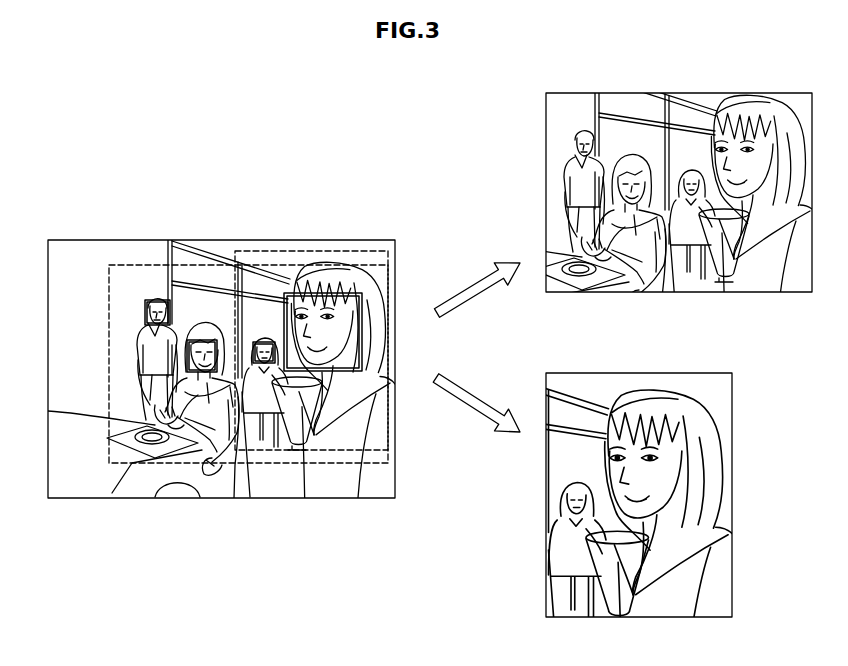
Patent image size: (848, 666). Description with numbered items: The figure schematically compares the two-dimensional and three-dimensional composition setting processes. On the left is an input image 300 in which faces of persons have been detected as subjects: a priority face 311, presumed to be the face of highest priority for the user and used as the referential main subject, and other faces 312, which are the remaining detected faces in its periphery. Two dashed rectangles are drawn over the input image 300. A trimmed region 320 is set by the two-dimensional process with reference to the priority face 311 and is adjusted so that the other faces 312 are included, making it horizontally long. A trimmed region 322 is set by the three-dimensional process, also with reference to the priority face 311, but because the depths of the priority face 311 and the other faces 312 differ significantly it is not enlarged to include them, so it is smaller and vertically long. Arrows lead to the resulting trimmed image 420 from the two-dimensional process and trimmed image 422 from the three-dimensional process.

The input image 300 is at (73, 240).
The priority face 311 is at (355, 293).
The other faces 312 is at (151, 300).
The trimmed region 320 is at (191, 265).
The trimmed region 322 is at (283, 251).
The trimmed image 420 is at (568, 93).
The trimmed image 422 is at (568, 373).